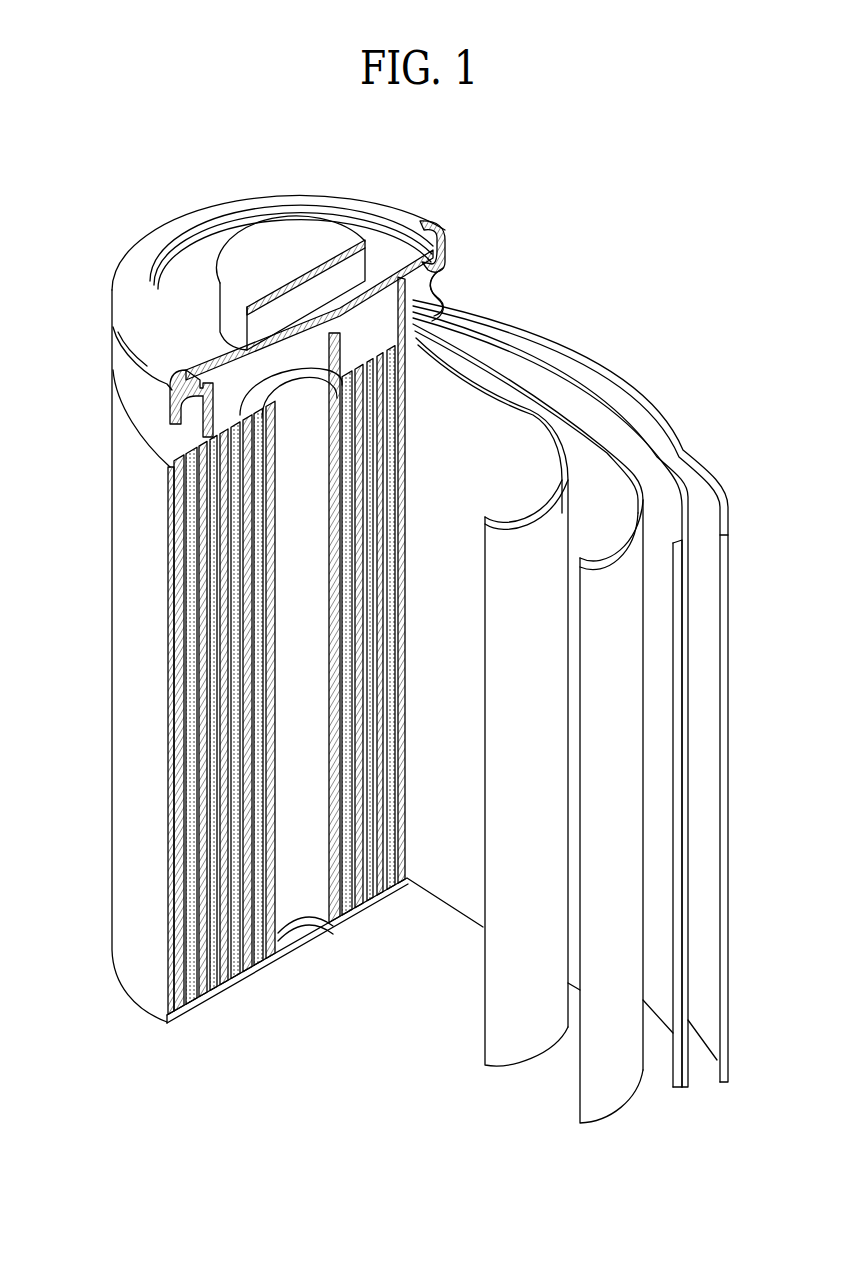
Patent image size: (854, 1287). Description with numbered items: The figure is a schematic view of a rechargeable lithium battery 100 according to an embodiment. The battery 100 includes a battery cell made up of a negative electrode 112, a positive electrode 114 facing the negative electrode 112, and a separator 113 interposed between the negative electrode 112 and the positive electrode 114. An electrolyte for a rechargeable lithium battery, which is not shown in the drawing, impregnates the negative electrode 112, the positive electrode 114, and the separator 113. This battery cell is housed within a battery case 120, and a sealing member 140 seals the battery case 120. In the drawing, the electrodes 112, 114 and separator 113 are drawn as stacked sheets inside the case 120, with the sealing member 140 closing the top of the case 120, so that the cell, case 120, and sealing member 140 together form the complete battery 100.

The rechargeable lithium battery 100 is at (428, 192).
The negative electrode 112 is at (690, 472).
The separator 113 is at (458, 378).
The positive electrode 114 is at (583, 437).
The battery case 120 is at (118, 651).
The sealing member 140 is at (260, 243).